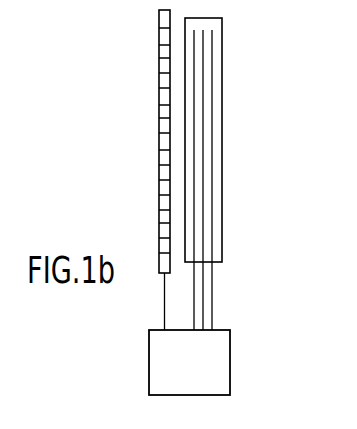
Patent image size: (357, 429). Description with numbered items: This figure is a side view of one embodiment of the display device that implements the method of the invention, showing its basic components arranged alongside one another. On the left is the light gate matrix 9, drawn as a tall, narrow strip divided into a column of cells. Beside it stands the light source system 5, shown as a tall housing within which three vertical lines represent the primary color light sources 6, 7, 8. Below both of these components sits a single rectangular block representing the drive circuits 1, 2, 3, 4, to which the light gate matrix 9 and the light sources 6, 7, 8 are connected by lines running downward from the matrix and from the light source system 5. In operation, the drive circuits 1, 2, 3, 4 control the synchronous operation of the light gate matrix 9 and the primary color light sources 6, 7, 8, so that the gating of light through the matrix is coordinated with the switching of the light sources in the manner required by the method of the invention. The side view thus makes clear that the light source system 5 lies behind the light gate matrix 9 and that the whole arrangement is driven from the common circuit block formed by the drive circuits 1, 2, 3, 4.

The drive circuit 1 is at (157, 364).
The drive circuit 2 is at (189, 362).
The drive circuit 3 is at (189, 362).
The drive circuit 4 is at (189, 362).
The light source system 5 is at (220, 246).
The primary color light source 6 is at (193, 62).
The primary color light source 7 is at (202, 90).
The primary color light source 8 is at (212, 131).
The light gate matrix 9 is at (163, 22).